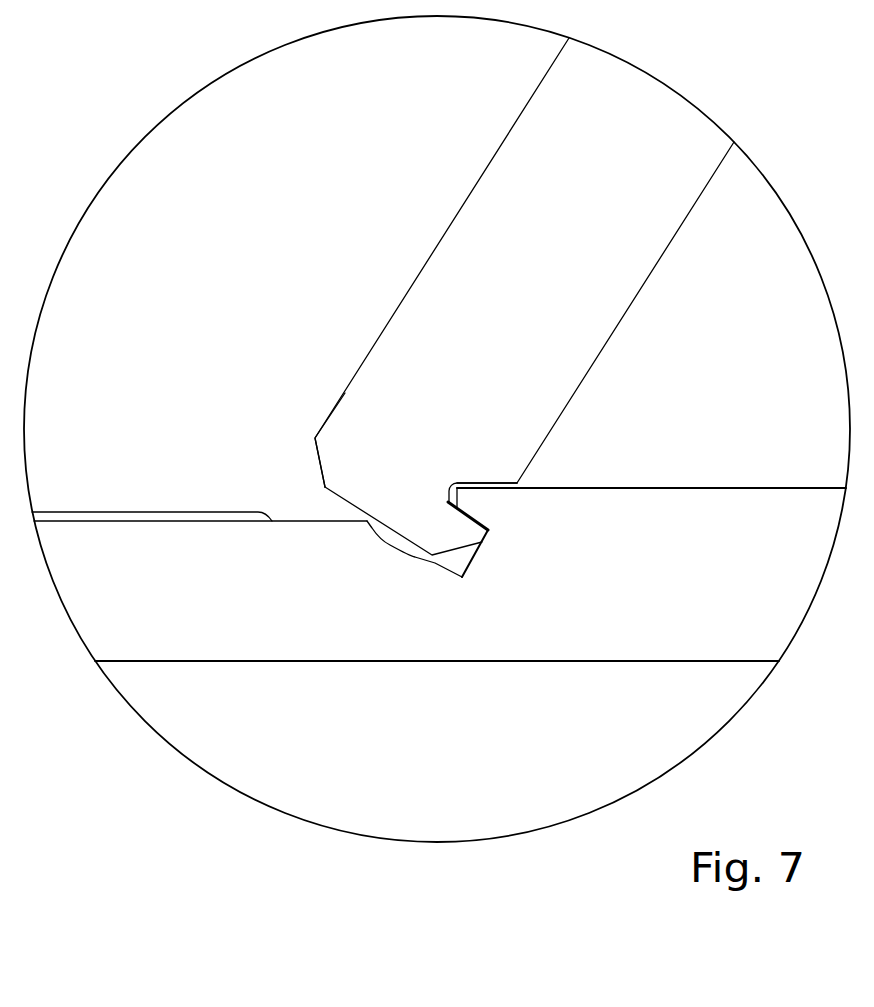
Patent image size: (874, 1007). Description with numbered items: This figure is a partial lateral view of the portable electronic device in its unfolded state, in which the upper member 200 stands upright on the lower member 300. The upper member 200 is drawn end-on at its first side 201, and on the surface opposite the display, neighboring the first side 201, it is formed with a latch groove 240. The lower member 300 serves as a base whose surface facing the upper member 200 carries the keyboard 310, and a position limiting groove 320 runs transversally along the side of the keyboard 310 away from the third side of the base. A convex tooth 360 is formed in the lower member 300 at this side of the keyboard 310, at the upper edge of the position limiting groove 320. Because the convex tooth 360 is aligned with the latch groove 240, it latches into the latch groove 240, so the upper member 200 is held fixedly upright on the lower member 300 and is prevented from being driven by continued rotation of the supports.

The upper member 200 is at (484, 162).
The first side 201 is at (332, 412).
The latch groove 240 is at (446, 496).
The lower member 300 is at (735, 478).
The keyboard 310 is at (143, 505).
The position limiting groove 320 is at (458, 558).
The convex tooth 360 is at (485, 503).